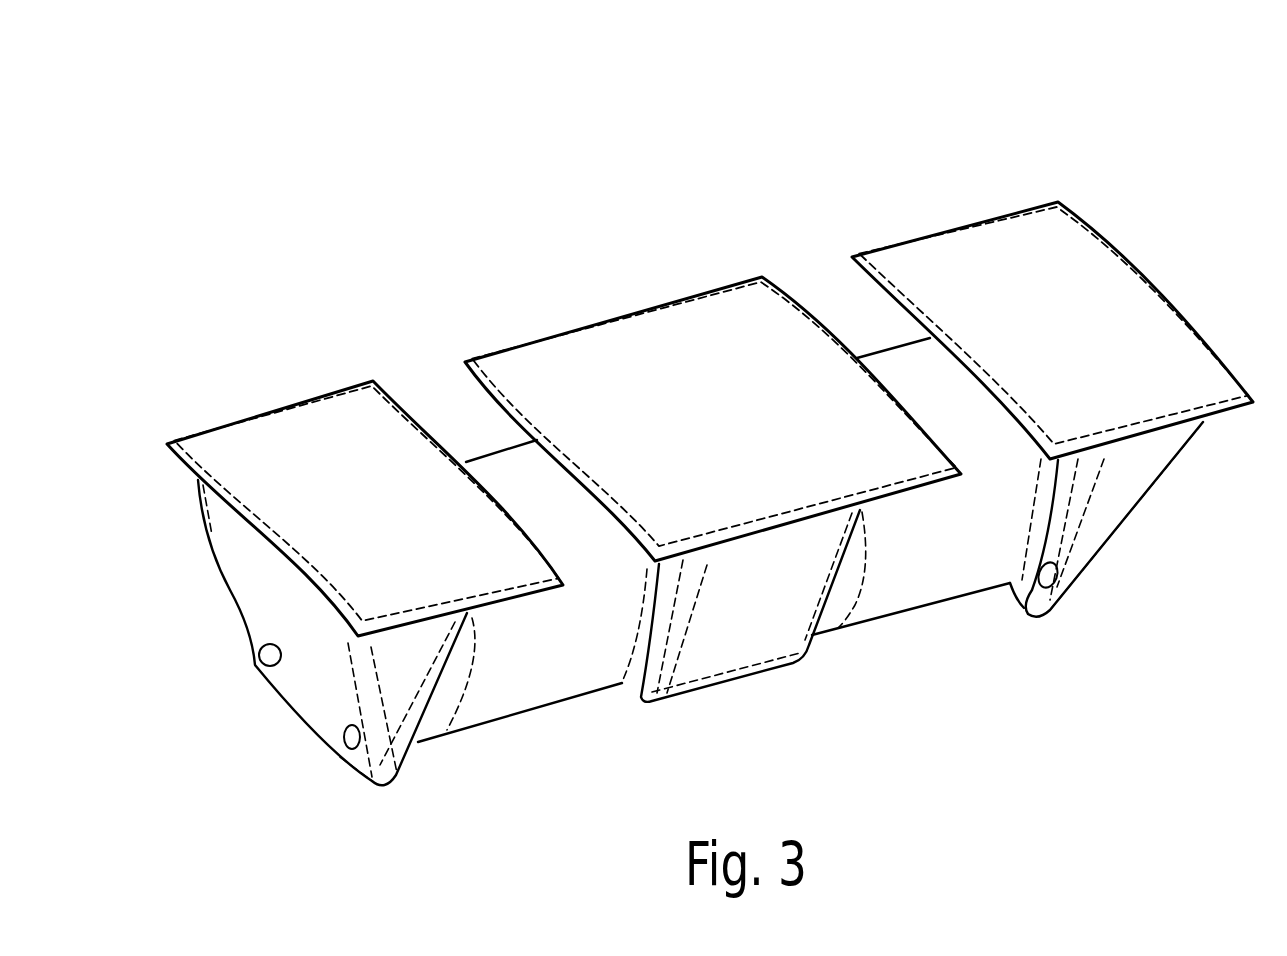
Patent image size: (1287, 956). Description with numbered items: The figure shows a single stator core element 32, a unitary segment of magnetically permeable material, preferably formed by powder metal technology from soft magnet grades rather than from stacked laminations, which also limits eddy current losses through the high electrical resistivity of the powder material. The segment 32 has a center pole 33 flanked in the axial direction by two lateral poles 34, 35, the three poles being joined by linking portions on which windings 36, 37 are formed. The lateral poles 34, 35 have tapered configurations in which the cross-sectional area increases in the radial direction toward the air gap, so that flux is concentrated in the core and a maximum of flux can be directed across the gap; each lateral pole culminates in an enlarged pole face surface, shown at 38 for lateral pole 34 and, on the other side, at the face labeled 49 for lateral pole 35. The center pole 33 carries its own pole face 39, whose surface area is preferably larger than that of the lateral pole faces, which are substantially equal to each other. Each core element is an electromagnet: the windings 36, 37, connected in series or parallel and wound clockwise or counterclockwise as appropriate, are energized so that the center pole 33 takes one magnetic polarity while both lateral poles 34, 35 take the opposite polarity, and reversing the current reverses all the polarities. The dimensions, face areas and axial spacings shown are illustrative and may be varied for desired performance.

The stator core element 32 is at (1153, 154).
The center pole 33 is at (707, 688).
The lateral pole 34 is at (385, 791).
The lateral pole 35 is at (1040, 618).
The winding 36 is at (522, 713).
The winding 37 is at (887, 615).
The pole face surface 38 is at (233, 417).
The pole face 39 is at (585, 320).
The right reflector panel 49 is at (957, 223).